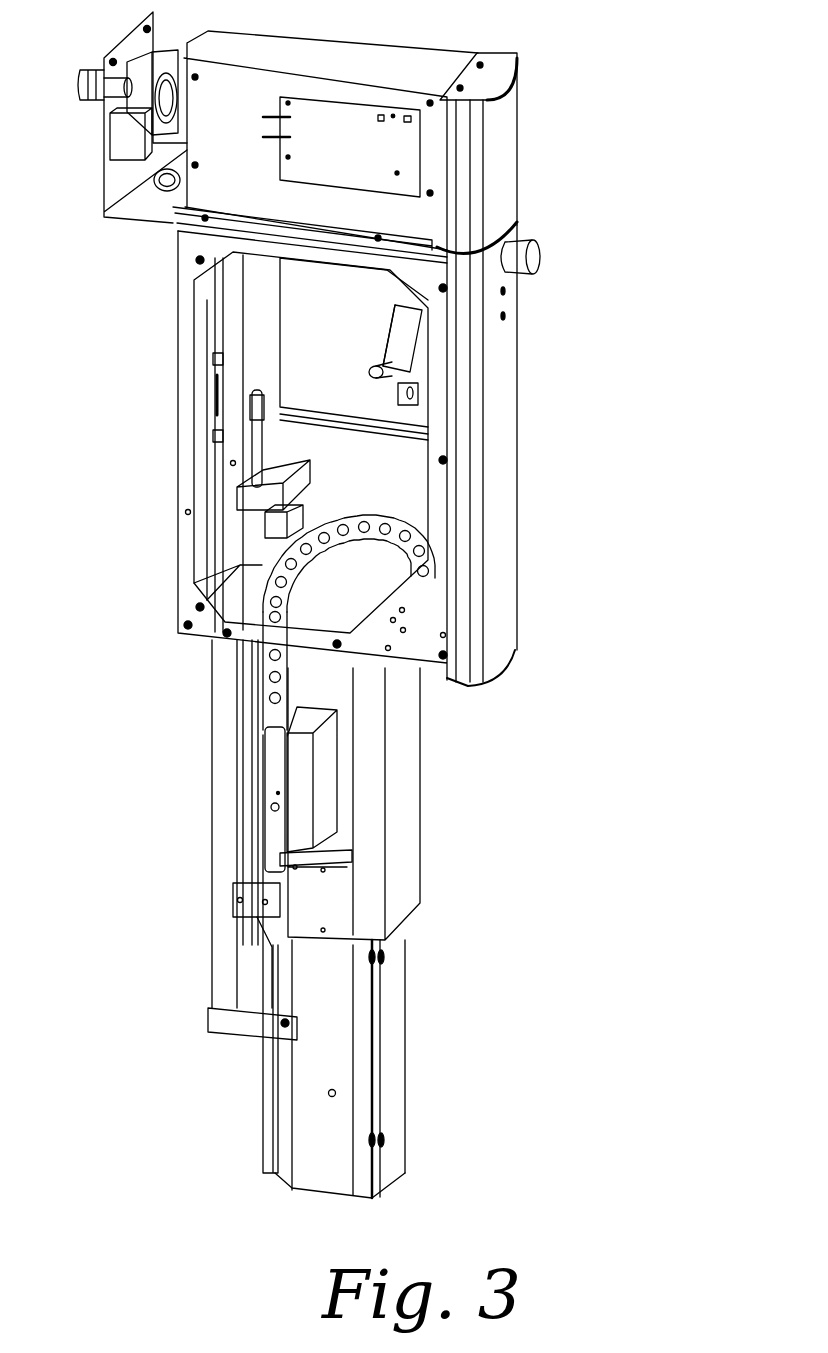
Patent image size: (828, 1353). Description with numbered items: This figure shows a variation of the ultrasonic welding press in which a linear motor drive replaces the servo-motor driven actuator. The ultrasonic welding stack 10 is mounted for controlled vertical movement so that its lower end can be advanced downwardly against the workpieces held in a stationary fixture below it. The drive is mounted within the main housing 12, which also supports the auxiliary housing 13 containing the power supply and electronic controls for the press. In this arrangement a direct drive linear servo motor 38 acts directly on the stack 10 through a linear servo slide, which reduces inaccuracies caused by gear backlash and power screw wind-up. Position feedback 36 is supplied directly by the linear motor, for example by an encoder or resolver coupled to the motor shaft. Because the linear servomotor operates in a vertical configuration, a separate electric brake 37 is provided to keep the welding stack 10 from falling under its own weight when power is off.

The ultrasonic welding stack 10 is at (407, 1056).
The main housing 12 is at (502, 581).
The auxiliary housing 13 is at (507, 174).
The position feedback 36 is at (246, 856).
The electric brake 37 is at (256, 497).
The direct drive linear servo motor 38 is at (337, 807).